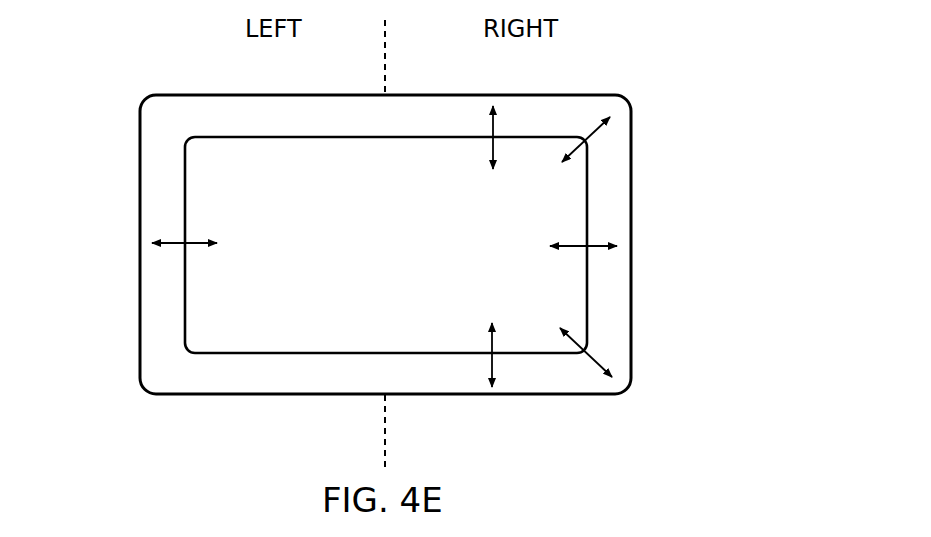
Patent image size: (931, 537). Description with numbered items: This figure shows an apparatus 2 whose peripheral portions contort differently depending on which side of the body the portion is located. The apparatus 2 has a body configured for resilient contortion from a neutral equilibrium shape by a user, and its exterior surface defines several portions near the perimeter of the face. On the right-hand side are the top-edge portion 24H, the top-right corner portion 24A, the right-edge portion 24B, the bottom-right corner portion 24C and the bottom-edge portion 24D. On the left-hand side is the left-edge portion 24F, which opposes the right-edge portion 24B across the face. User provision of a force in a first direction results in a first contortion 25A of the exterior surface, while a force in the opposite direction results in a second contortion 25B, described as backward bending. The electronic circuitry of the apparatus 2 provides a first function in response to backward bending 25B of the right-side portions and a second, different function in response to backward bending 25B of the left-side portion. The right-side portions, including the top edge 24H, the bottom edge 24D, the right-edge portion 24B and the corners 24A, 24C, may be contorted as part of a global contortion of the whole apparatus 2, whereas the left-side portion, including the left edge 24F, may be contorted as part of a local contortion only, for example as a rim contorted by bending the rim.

The apparatus 2 is at (760, 96).
The top-edge portion 24H is at (451, 95).
The top-right corner portion 24A is at (628, 104).
The right-edge portion 24B is at (630, 246).
The bottom-right corner portion 24C is at (620, 378).
The bottom-edge portion 24D is at (458, 383).
The left-edge portion 24F is at (160, 233).
The first contortion 25A is at (486, 112).
The second contortion 25B is at (483, 163).